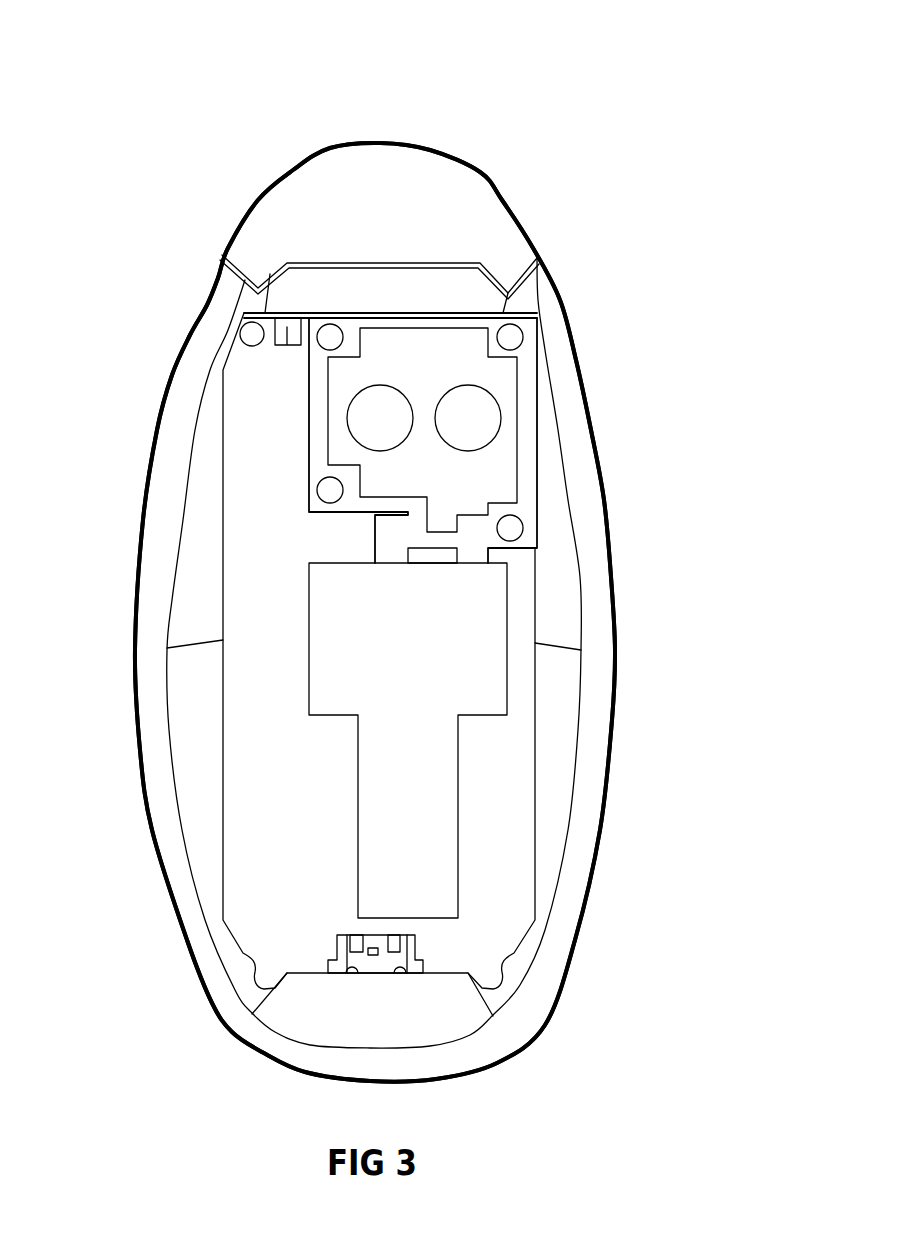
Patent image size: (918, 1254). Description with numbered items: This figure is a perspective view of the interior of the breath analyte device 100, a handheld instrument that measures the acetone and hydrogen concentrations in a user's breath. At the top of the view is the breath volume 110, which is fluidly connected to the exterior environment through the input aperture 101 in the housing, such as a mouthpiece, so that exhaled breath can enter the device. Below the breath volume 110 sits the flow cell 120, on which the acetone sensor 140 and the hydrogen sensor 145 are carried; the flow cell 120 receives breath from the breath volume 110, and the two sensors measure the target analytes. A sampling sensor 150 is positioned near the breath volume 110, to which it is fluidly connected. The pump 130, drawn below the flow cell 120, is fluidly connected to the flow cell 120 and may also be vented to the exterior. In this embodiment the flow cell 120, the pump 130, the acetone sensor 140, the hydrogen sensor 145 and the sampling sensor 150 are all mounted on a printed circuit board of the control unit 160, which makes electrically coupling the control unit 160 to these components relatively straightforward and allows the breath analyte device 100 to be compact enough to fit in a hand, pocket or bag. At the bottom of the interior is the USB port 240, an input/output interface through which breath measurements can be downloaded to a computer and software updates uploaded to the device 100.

The breath analyte device 100 is at (148, 174).
The input aperture 101 is at (450, 197).
The breath volume 110 is at (377, 297).
The flow cell 120 is at (493, 383).
The pump 130 is at (348, 607).
The acetone sensor 140 is at (385, 420).
The hydrogen sensor 145 is at (465, 420).
The sampling sensor 150 is at (285, 330).
The control unit 160 is at (270, 912).
The Universal Serial Bus (USB) port 240 is at (360, 962).